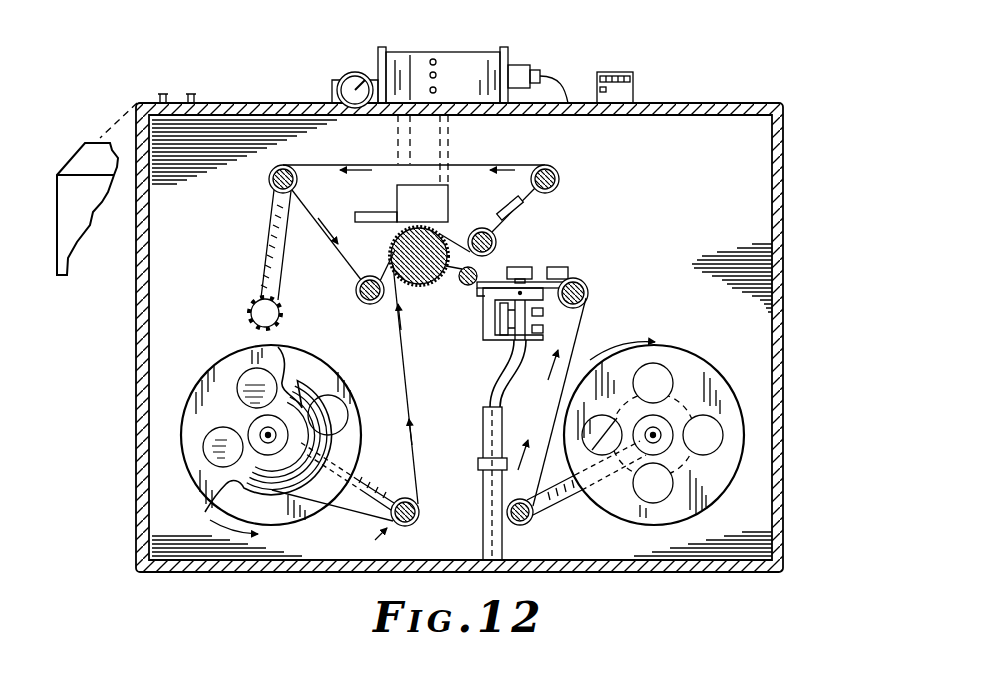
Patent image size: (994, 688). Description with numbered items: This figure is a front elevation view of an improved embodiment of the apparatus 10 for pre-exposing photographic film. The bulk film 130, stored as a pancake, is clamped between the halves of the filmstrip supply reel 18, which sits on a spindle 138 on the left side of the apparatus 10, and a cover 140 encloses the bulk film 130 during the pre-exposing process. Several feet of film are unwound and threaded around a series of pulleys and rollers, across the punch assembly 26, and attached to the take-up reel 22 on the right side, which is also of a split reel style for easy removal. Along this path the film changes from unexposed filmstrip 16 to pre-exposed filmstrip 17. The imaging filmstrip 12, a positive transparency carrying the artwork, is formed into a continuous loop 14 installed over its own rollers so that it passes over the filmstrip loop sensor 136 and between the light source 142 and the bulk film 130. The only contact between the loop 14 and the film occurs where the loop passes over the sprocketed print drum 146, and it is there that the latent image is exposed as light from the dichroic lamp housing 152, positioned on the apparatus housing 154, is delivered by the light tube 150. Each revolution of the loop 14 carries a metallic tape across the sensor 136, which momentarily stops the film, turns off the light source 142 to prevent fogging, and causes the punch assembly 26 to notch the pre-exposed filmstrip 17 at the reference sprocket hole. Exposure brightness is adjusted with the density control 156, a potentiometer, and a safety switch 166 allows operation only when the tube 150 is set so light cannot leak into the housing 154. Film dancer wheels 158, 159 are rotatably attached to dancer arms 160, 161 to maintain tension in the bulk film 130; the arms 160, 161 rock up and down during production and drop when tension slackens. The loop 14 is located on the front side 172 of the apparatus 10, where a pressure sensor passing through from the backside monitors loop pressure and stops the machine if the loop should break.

The apparatus 10 is at (709, 46).
The imaging filmstrip 12 is at (524, 168).
The continuous loop 14 is at (530, 222).
The unexposed filmstrip 16 is at (396, 357).
The pre-exposed filmstrip 17 is at (577, 302).
The filmstrip supply reel 18 is at (210, 506).
The take-up reel 22 is at (720, 396).
The filmstrip notch punch assembly 26 is at (584, 266).
The bulk film 130 is at (348, 524).
The filmstrip loop sensor 136 is at (508, 208).
The spindle 138 is at (285, 416).
The cover 140 is at (87, 165).
The light source 142 is at (397, 204).
The sprocketed print drum 146 is at (436, 286).
The light tube 150 is at (430, 148).
The dichroic lamp housing 152 is at (510, 48).
The apparatus housing 154 is at (784, 192).
The density control 156 is at (349, 72).
The film dancer wheel 158 is at (410, 526).
The film dancer wheel 159 is at (530, 514).
The dancer arm 160 is at (410, 500).
The dancer arm 161 is at (584, 494).
The safety switch 166 is at (356, 222).
The front side 172 is at (772, 341).